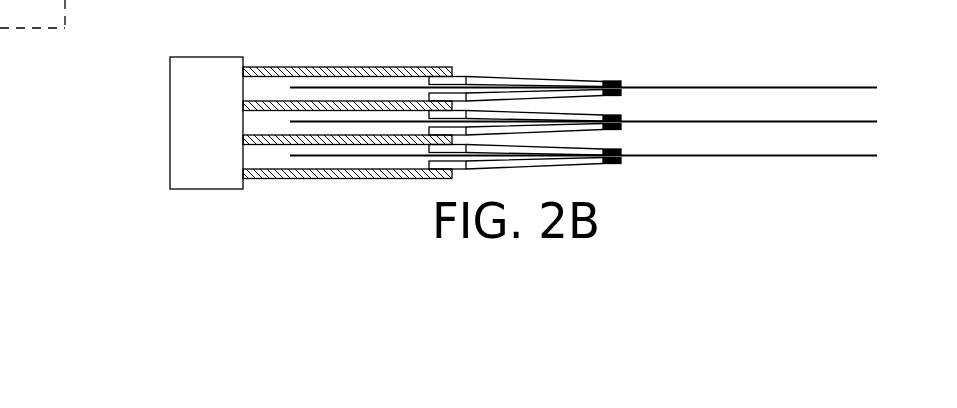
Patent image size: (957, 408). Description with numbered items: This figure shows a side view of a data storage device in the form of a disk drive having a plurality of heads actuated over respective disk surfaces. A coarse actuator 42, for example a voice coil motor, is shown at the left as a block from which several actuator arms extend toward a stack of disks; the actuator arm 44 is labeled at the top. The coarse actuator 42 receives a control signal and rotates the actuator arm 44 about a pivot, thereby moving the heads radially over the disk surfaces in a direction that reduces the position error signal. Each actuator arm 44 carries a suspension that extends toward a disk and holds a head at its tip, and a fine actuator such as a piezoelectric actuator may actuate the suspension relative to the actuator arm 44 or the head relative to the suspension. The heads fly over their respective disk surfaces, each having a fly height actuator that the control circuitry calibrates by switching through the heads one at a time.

The coarse actuator 42 is at (210, 57).
The actuator arm 44 is at (329, 67).